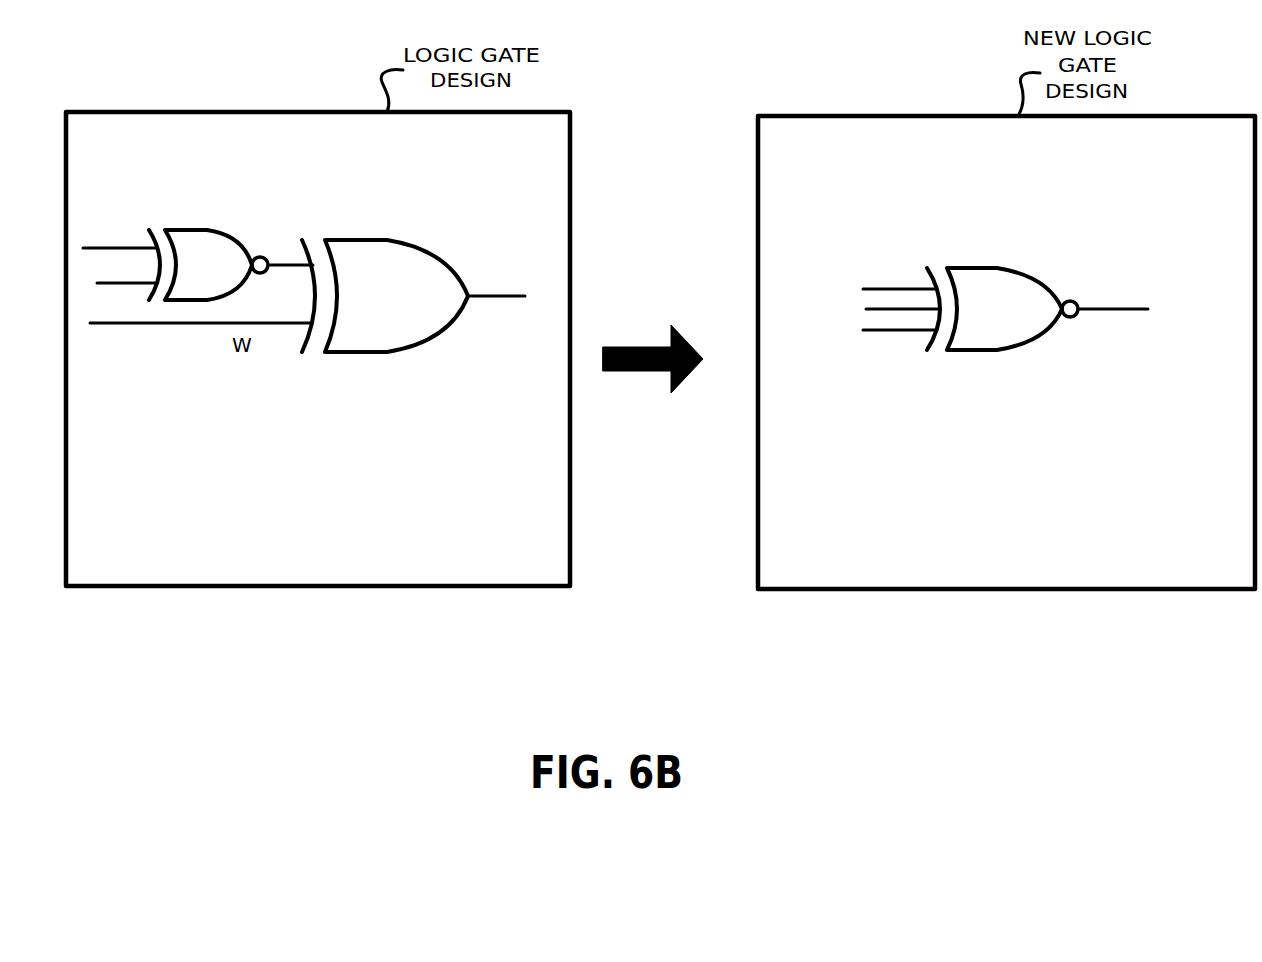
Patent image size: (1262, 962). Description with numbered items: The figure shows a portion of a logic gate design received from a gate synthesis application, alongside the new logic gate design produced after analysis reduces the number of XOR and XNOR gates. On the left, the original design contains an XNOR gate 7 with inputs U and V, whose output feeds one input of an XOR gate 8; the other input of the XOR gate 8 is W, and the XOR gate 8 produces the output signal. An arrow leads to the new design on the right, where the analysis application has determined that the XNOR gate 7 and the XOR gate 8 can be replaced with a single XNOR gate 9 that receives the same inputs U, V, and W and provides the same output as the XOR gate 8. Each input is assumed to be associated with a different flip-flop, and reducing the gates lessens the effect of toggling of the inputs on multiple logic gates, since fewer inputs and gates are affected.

The XNOR gate 7 is at (207, 230).
The XOR gate 8 is at (387, 353).
The XNOR gate 9 is at (997, 351).